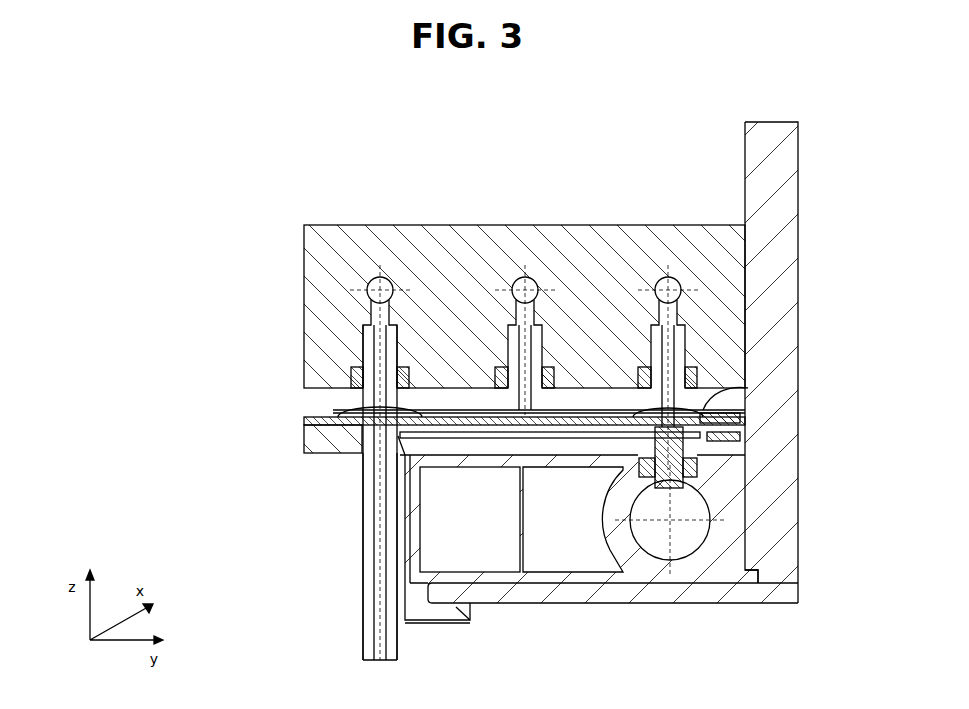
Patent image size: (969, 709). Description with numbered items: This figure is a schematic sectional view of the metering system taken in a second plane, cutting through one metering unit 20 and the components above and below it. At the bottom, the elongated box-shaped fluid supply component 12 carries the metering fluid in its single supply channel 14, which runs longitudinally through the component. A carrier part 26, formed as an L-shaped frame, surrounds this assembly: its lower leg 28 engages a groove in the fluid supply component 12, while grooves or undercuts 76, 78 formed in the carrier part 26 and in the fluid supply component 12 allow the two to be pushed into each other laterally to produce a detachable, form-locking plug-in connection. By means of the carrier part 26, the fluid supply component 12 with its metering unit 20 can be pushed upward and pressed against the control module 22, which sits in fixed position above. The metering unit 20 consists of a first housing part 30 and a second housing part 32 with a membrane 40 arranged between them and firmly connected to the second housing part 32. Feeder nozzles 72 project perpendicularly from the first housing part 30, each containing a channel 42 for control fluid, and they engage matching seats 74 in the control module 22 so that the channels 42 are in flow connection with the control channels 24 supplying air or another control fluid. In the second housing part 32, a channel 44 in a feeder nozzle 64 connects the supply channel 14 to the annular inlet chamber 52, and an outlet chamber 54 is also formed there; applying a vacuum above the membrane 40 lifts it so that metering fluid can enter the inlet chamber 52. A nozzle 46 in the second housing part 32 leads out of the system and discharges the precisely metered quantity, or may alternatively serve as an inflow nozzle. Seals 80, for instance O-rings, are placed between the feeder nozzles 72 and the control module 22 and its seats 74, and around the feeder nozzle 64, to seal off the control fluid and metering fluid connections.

The fluid supply component 12 is at (717, 572).
The supply channel 14 is at (663, 553).
The metering unit 20 is at (166, 418).
The control module 22 is at (593, 270).
The control channel 24 is at (368, 292).
The carrier part 26 is at (778, 165).
The lower leg 28 is at (565, 603).
The first housing part 30 is at (323, 412).
The second housing part 32 is at (320, 445).
The membrane 40 is at (360, 455).
The channel 42 is at (363, 352).
The channel 44 is at (705, 436).
The nozzle 46 is at (362, 560).
The inlet chamber 52 is at (748, 388).
The outlet chamber 54 is at (405, 428).
The feeder nozzle 64 is at (695, 470).
The feeder nozzle 72 is at (363, 342).
The seat 74 is at (475, 311).
The undercut 76 is at (752, 580).
The undercut 78 is at (456, 607).
The seal 80 is at (352, 378).